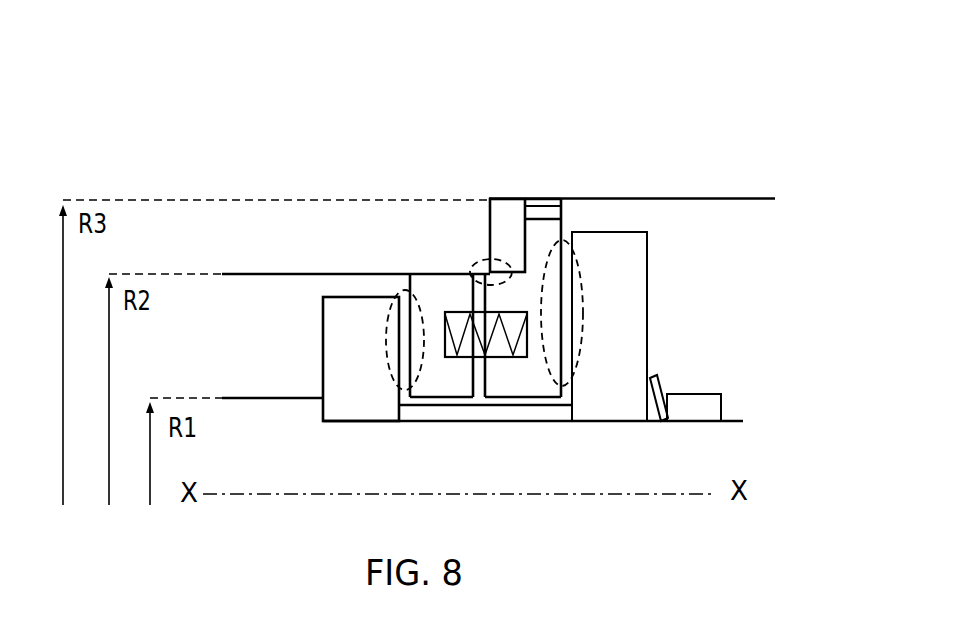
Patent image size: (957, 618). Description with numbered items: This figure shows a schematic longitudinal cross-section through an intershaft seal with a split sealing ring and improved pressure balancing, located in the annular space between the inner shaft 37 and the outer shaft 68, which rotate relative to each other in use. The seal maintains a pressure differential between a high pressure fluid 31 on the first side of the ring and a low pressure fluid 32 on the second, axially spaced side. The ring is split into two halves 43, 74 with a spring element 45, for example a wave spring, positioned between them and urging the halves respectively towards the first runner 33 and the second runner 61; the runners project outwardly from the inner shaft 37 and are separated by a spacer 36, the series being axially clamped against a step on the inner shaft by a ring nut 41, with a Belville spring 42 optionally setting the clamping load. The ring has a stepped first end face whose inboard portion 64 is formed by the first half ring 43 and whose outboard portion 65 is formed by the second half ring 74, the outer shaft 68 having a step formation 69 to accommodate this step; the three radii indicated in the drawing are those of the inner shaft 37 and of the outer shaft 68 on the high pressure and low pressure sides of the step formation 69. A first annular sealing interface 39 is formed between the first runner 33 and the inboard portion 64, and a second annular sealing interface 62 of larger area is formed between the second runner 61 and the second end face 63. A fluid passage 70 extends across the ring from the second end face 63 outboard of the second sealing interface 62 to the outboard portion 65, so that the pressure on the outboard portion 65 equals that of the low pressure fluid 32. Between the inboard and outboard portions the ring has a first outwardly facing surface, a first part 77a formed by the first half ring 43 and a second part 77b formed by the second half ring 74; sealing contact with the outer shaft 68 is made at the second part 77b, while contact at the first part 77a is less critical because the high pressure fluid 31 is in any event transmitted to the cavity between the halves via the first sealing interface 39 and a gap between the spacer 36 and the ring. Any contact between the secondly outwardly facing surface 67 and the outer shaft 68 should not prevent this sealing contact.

The high pressure fluid 31 is at (272, 353).
The low pressure fluid 32 is at (712, 327).
The first runner 33 is at (360, 342).
The spacer 36 is at (479, 406).
The inner shaft 37 is at (733, 423).
The first annular sealing interface 39 is at (400, 296).
The ring nut 41 is at (727, 403).
The Belville spring 42 is at (662, 385).
The first half ring 43 is at (422, 290).
The spring element 45 is at (438, 273).
The second runner 61 is at (632, 280).
The second annular sealing interface 62 is at (578, 270).
The second end face 63 is at (565, 368).
The inboard portion 64 is at (405, 380).
The outboard portion 65 is at (520, 293).
The secondly outwardly facing surface 67 is at (533, 200).
The outer shaft 68 is at (738, 198).
The step formation 69 is at (480, 262).
The fluid passage 70 is at (557, 199).
The second half ring 74 is at (490, 223).
The first part of the first outwardly facing surface 77a is at (465, 312).
The second part of the first outwardly facing surface 77b is at (462, 272).